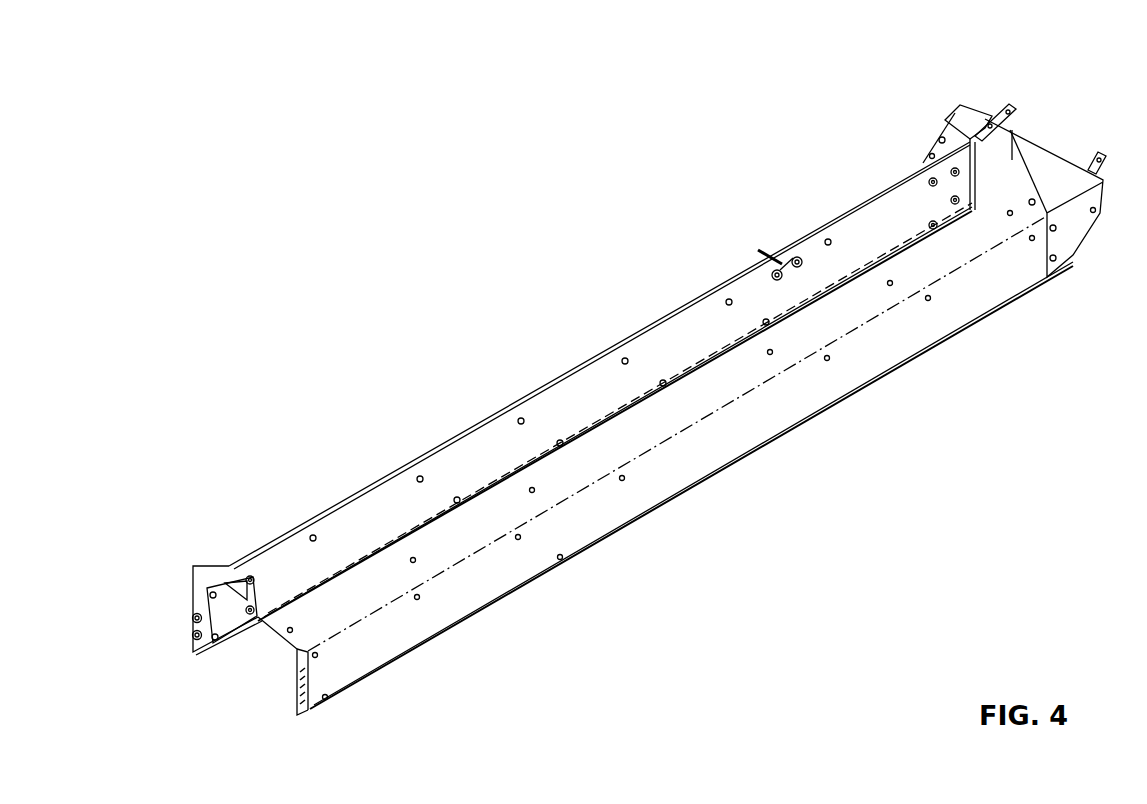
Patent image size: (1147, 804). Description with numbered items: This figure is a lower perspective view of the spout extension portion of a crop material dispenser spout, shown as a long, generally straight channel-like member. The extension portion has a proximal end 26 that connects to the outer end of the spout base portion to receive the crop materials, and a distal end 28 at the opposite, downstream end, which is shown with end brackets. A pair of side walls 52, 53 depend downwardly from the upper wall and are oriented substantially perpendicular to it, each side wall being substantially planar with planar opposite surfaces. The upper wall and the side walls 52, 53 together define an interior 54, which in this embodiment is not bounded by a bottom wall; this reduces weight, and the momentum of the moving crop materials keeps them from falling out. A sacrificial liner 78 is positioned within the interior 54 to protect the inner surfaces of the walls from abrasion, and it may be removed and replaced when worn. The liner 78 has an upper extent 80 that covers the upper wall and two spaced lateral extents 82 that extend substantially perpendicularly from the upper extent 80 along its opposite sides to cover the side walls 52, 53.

The proximal end 26 is at (251, 584).
The distal end 28 is at (1050, 139).
The side wall 52 is at (460, 455).
The side wall 53 is at (637, 422).
The interior 54 is at (243, 661).
The sacrificial liner 78 is at (615, 412).
The upper extent 80 is at (677, 441).
The lateral extents 82 is at (691, 489).